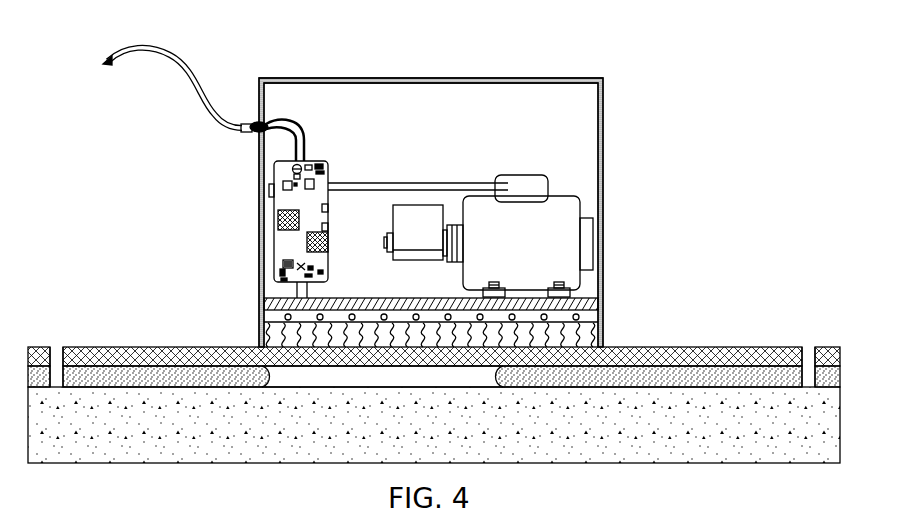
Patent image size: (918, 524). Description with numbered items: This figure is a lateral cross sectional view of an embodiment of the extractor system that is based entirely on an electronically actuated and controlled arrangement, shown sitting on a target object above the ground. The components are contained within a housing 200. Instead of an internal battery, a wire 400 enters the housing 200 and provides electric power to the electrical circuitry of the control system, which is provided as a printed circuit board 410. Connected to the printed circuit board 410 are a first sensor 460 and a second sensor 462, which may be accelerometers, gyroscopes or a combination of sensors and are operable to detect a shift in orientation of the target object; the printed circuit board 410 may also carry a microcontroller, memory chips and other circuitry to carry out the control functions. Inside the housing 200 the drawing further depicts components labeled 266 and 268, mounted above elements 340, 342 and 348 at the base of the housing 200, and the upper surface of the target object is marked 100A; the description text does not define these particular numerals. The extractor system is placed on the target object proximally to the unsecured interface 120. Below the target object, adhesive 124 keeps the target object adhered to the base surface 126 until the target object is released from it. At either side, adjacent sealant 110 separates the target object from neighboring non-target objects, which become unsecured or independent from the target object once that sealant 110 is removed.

The wire 400 is at (142, 47).
The housing 200 is at (603, 135).
The printed circuit board 410 is at (274, 173).
The first sensor 460 is at (278, 220).
The second sensor 462 is at (307, 240).
The pump 266 is at (432, 241).
The motor 268 is at (537, 255).
The base plate 340 is at (270, 310).
The fasteners 342 is at (287, 318).
The vibration isolation layer 348 is at (603, 338).
The pavement surface 100A is at (118, 347).
The adjacent sealant 110 is at (52, 352).
The adhesive 124 is at (695, 380).
The unsecured interface 120 is at (382, 377).
The base surface 126 is at (448, 437).